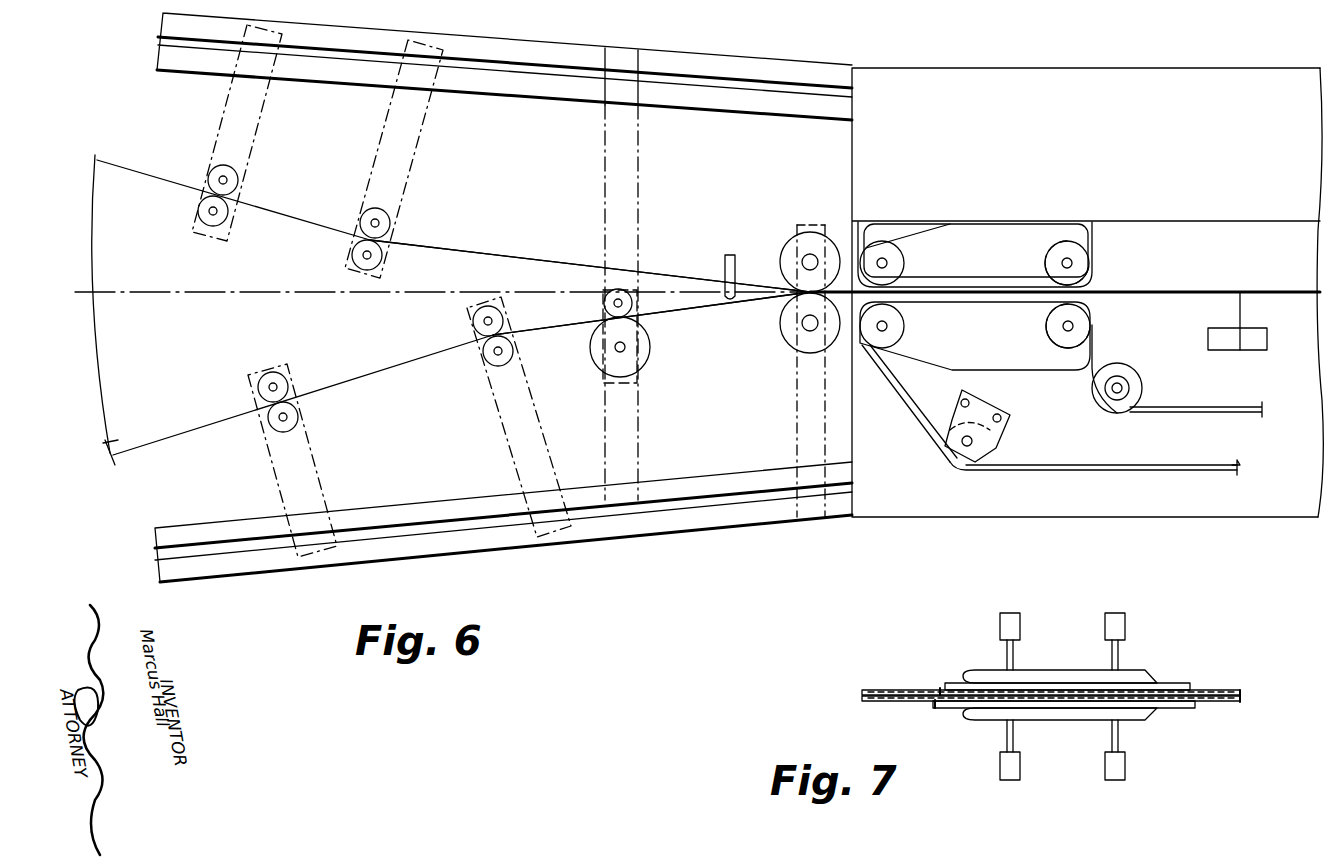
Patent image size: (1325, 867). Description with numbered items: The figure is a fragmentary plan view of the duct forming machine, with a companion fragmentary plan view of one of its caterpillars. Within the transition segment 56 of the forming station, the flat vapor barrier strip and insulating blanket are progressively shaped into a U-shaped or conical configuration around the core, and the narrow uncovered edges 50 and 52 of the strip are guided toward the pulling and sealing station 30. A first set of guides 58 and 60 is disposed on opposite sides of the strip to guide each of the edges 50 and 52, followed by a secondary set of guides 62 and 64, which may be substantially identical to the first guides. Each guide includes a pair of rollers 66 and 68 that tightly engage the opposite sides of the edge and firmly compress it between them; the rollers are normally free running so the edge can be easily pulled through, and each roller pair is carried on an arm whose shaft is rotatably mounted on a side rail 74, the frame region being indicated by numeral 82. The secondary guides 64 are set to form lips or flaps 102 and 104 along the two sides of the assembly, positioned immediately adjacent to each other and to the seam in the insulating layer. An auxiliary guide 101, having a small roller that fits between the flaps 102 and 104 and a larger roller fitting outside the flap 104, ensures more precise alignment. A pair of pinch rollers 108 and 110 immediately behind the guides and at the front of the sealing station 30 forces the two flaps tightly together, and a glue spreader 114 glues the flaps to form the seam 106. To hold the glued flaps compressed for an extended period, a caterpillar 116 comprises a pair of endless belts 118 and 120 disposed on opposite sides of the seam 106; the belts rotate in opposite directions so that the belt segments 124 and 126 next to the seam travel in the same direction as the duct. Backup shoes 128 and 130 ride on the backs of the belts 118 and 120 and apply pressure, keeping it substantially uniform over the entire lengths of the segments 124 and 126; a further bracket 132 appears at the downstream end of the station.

In FIG. 6, the pulling and sealing station 30 is at (1107, 485).
In FIG. 6, the edge 50 is at (100, 172).
In FIG. 6, the edge 52 is at (108, 446).
In FIG. 6, the transition segment 56 is at (408, 477).
In FIG. 6, the first guide 58 is at (253, 166).
In FIG. 6, the first guide 60 is at (253, 447).
In FIG. 6, the secondary guide 62 is at (415, 186).
In FIG. 6, the secondary guide 64 is at (480, 423).
In FIG. 6, the roller 66 is at (208, 178).
In FIG. 6, the roller 68 is at (198, 211).
In FIG. 6, the side rail 74 is at (478, 43).
In FIG. 6, the frame plate 82 is at (532, 128).
In FIG. 6, the auxiliary guide 101 is at (648, 378).
In FIG. 6, the flap 102 is at (670, 272).
In FIG. 7, the flap 102 is at (905, 688).
In FIG. 6, the flap 104 is at (682, 308).
In FIG. 7, the flap 104 is at (905, 702).
In FIG. 6, the seam 106 is at (1130, 293).
In FIG. 7, the seam 106 is at (1232, 690).
In FIG. 6, the pinch roller 108 is at (785, 330).
In FIG. 6, the pinch roller 110 is at (787, 243).
In FIG. 6, the glue spreader 114 is at (722, 265).
In FIG. 6, the caterpillar 116 is at (1016, 355).
In FIG. 6, the endless belt 118 is at (1097, 252).
In FIG. 7, the endless belt 118 is at (945, 684).
In FIG. 6, the endless belt 120 is at (1040, 464).
In FIG. 7, the endless belt 120 is at (937, 706).
In FIG. 6, the belt segment 124 is at (970, 305).
In FIG. 7, the belt segment 124 is at (1150, 710).
In FIG. 6, the belt segment 126 is at (955, 280).
In FIG. 7, the belt segment 126 is at (1160, 683).
In FIG. 6, the backup shoe 128 is at (1006, 276).
In FIG. 7, the backup shoe 128 is at (1055, 668).
In FIG. 6, the backup shoe 130 is at (998, 308).
In FIG. 7, the backup shoe 130 is at (1038, 720).
In FIG. 6, the sensor bracket 132 is at (1268, 340).